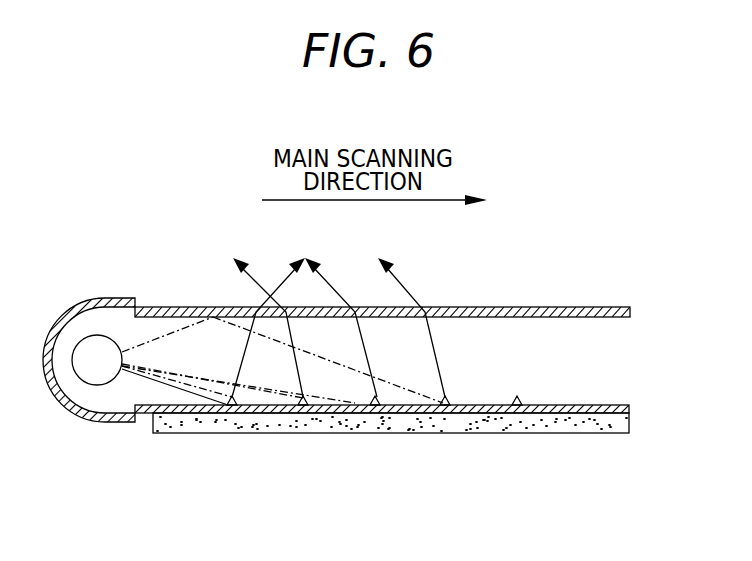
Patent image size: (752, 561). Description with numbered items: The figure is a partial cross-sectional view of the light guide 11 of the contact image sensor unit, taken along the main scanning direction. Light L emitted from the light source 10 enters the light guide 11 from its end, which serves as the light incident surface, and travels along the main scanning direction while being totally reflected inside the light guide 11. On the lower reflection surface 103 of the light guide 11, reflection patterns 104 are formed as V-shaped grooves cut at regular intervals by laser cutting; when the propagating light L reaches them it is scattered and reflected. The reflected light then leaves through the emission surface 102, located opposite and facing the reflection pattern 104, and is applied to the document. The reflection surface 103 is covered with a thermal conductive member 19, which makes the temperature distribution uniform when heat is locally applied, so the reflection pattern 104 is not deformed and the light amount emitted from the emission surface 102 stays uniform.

The light source 10 is at (97, 348).
The light guide 11 is at (190, 224).
The thermal conductive member 19 is at (561, 433).
The emission surface 102 is at (577, 307).
The reflection surface 103 is at (613, 405).
The reflection pattern 104 is at (515, 407).
The light L is at (402, 278).